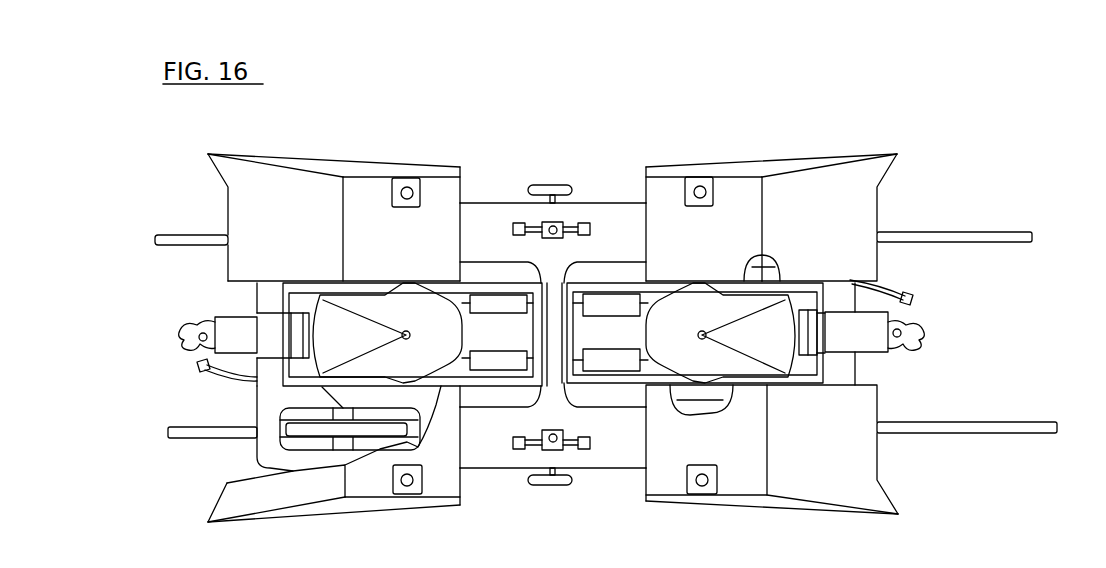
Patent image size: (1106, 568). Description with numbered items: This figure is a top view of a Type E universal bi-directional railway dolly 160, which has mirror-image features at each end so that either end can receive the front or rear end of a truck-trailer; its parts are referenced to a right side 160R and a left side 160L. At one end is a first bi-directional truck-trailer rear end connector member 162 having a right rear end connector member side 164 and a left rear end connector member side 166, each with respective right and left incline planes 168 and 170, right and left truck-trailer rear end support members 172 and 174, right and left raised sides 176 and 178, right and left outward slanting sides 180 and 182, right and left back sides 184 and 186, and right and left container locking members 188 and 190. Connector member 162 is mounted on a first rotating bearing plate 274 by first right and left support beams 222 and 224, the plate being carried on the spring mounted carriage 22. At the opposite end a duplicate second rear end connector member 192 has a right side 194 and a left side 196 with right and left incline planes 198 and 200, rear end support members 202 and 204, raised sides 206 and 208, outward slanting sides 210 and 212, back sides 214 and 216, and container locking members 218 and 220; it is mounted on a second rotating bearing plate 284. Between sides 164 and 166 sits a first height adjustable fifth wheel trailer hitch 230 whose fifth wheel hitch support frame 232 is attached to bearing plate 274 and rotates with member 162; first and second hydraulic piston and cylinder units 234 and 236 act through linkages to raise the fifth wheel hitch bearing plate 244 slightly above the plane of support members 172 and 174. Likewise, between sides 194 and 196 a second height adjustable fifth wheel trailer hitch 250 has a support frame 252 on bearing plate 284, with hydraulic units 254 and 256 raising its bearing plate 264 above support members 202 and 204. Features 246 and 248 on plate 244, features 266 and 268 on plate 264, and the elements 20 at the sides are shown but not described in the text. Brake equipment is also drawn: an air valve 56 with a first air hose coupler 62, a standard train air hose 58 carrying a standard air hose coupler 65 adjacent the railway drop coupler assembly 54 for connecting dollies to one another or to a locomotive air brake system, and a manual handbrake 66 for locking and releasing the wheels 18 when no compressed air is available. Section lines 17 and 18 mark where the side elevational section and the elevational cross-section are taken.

The Type E railway dolly 160 is at (588, 98).
The right side 160R is at (553, 168).
The left side 160L is at (562, 498).
The first bi-directional truck-trailer rear end connector member 162 is at (743, 138).
The right first rear end connector member side 164 is at (883, 208).
The left rear end connector member side 166 is at (650, 506).
The right incline plane 168 is at (863, 180).
The left incline plane 170 is at (860, 490).
The right truck-trailer rear end support member 172 is at (753, 243).
The left truck-trailer rear end support member 174 is at (753, 433).
The right raised side 176 is at (697, 165).
The left raised side 178 is at (735, 502).
The right outward slanting side 180 is at (862, 150).
The left outward slanting side 182 is at (842, 512).
The right back side 184 is at (645, 236).
The left back side 186 is at (645, 433).
The right container locking member 188 is at (708, 206).
The left container locking member 190 is at (710, 465).
The second bi-directional truck-trailer rear end connector member 192 is at (240, 140).
The right second rear end connector member side 194 is at (226, 260).
The left second rear end connector member side 196 is at (224, 483).
The right incline plane 198 is at (232, 197).
The left incline plane 200 is at (243, 497).
The right truck-trailer rear end support member 202 is at (357, 250).
The left truck-trailer rear end support member 204 is at (360, 477).
The right raised side 206 is at (385, 167).
The left raised side 208 is at (412, 505).
The right outward slanting side 210 is at (207, 153).
The left outward slanting side 212 is at (240, 515).
The right back side 214 is at (463, 233).
The left back side 216 is at (465, 432).
The right container locking member 218 is at (400, 207).
The left container locking member 220 is at (405, 465).
The first right support beam 222 is at (752, 265).
The first left support beam 224 is at (712, 395).
The first height adjustable fifth wheel trailer hitch 230 is at (708, 282).
The fifth wheel hitch support frame 232 is at (800, 281).
The first hydraulic piston and cylinder unit 234 is at (629, 313).
The second hydraulic piston and cylinder unit 236 is at (629, 368).
The fifth wheel hitch bearing plate 244 is at (727, 319).
The right cam arm 246 is at (745, 346).
The right cam pivot 248 is at (703, 338).
The second height adjustable fifth wheel trailer hitch 250 is at (408, 282).
The fifth wheel hitch support frame 252 is at (312, 281).
The first hydraulic piston and cylinder unit 254 is at (515, 312).
The second hydraulic piston and cylinder unit 256 is at (515, 368).
The fifth wheel hitch bearing plate 264 is at (427, 368).
The left cam arm 266 is at (370, 348).
The left cam pivot 268 is at (430, 327).
The first rotating bearing plate 274 is at (600, 270).
The second rotating bearing plate 284 is at (518, 270).
The air valve 56 is at (557, 240).
The first air hose coupler 62 is at (515, 224).
The manual handbrake 66 is at (547, 183).
The railway drop coupler assembly 54 is at (190, 320).
The standard train air hose 58 is at (242, 380).
The standard air hose coupler 65 is at (200, 368).
The guide rail 20 is at (998, 243).
The spring mounted carriage 22 is at (255, 413).
The section lines 17— 17 is at (203, 387).
The wheels 18 is at (370, 413).